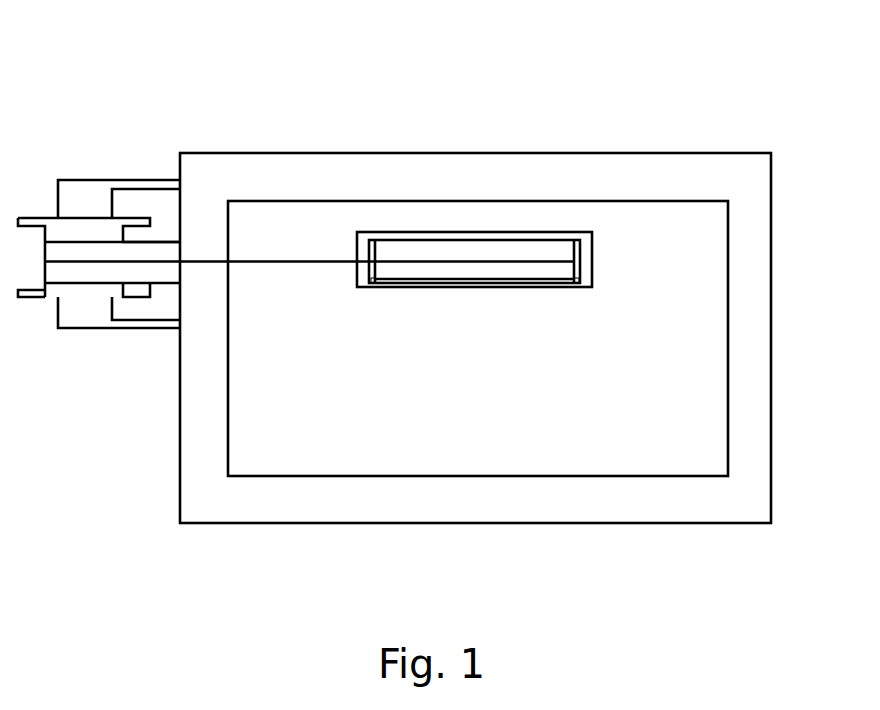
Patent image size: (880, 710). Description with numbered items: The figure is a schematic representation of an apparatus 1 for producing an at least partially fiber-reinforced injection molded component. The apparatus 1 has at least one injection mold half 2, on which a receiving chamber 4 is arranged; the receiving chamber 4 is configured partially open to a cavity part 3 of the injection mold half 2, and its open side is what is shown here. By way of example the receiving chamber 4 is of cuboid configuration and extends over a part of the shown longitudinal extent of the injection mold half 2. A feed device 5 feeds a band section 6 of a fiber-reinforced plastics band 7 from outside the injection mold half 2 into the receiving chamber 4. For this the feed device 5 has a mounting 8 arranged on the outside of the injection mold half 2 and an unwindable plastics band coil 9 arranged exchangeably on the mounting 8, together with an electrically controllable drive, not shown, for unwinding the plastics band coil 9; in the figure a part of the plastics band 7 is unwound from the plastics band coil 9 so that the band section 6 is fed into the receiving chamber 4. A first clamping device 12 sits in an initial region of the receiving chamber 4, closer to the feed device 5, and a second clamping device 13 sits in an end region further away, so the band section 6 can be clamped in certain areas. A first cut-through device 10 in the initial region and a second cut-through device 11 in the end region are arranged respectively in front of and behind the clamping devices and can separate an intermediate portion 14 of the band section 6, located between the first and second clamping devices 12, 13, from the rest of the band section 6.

The apparatus 1 is at (385, 95).
The injection mold half 2 is at (673, 178).
The cavity part 3 is at (699, 407).
The receiving chamber 4 is at (512, 287).
The feed device 5 is at (196, 251).
The band section 6 is at (463, 240).
The fiber-reinforced plastics band 7 is at (172, 298).
The mounting 8 is at (115, 341).
The plastics band coil 9 is at (52, 290).
The first cut-through device 10 is at (361, 255).
The second cut-through device 11 is at (584, 250).
The first clamping device 12 is at (367, 287).
The second clamping device 13 is at (575, 287).
The intermediate portion 14 is at (447, 285).